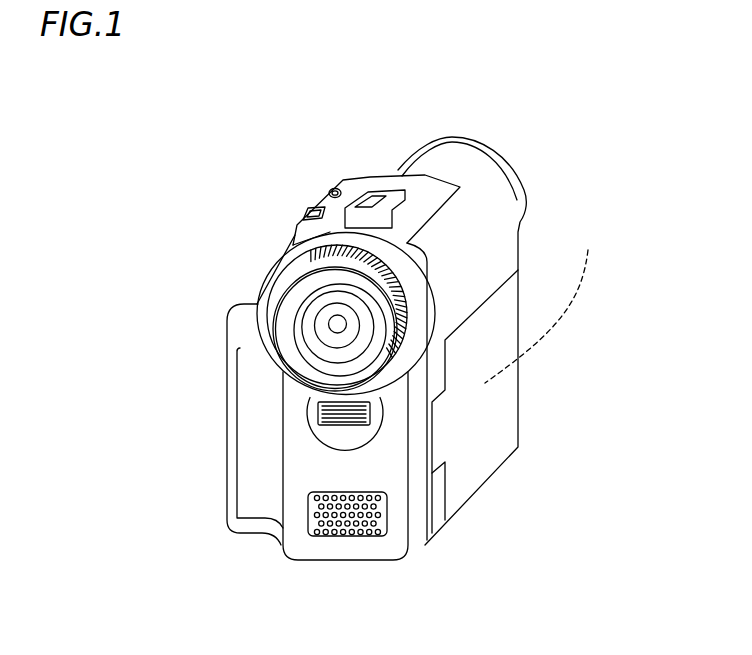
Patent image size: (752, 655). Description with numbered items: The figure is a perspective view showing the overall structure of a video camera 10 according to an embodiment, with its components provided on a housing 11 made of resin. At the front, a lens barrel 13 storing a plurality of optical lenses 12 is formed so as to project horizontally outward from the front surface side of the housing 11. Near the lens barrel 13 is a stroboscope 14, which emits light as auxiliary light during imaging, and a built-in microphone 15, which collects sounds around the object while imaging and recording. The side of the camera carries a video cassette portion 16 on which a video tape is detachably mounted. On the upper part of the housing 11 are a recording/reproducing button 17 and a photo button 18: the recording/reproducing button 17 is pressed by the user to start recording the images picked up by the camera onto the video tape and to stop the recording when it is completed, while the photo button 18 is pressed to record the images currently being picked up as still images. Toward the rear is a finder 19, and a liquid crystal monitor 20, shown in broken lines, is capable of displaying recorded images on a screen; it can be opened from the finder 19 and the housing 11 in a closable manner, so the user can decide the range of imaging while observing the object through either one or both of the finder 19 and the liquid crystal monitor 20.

The video camera 10 is at (117, 107).
The housing 11 is at (423, 165).
The optical lenses 12 is at (324, 342).
The lens barrel 13 is at (292, 275).
The stroboscope 14 is at (362, 421).
The built-in microphone 15 is at (382, 523).
The video cassette portion 16 is at (232, 440).
The recording/reproducing button 17 is at (312, 207).
The photo button 18 is at (331, 188).
The finder 19 is at (482, 175).
The liquid crystal monitor 20 is at (544, 303).